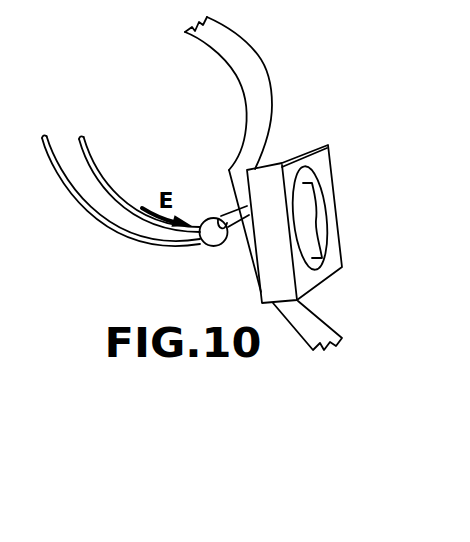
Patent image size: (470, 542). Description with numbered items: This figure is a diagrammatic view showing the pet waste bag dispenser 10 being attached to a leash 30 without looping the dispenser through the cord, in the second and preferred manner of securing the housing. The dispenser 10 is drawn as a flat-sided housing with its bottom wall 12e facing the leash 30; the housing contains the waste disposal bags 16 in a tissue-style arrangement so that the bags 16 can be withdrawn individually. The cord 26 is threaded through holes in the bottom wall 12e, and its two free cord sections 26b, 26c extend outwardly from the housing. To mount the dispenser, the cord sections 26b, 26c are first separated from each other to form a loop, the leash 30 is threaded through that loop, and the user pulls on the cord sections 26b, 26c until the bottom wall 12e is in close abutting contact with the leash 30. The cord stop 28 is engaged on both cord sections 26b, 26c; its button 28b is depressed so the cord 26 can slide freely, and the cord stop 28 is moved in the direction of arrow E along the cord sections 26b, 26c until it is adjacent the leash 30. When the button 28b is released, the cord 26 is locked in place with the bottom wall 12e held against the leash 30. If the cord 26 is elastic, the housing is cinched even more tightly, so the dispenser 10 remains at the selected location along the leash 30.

The pet waste bag dispenser 10 is at (368, 146).
The bottom wall 12e is at (246, 183).
The waste disposal bags 16 is at (308, 225).
The cord 26 is at (114, 213).
The free end of cord 26b is at (62, 176).
The free end of cord 26c is at (89, 166).
The cord stop 28 is at (226, 251).
The button 28b is at (221, 220).
The leash 30 is at (262, 92).